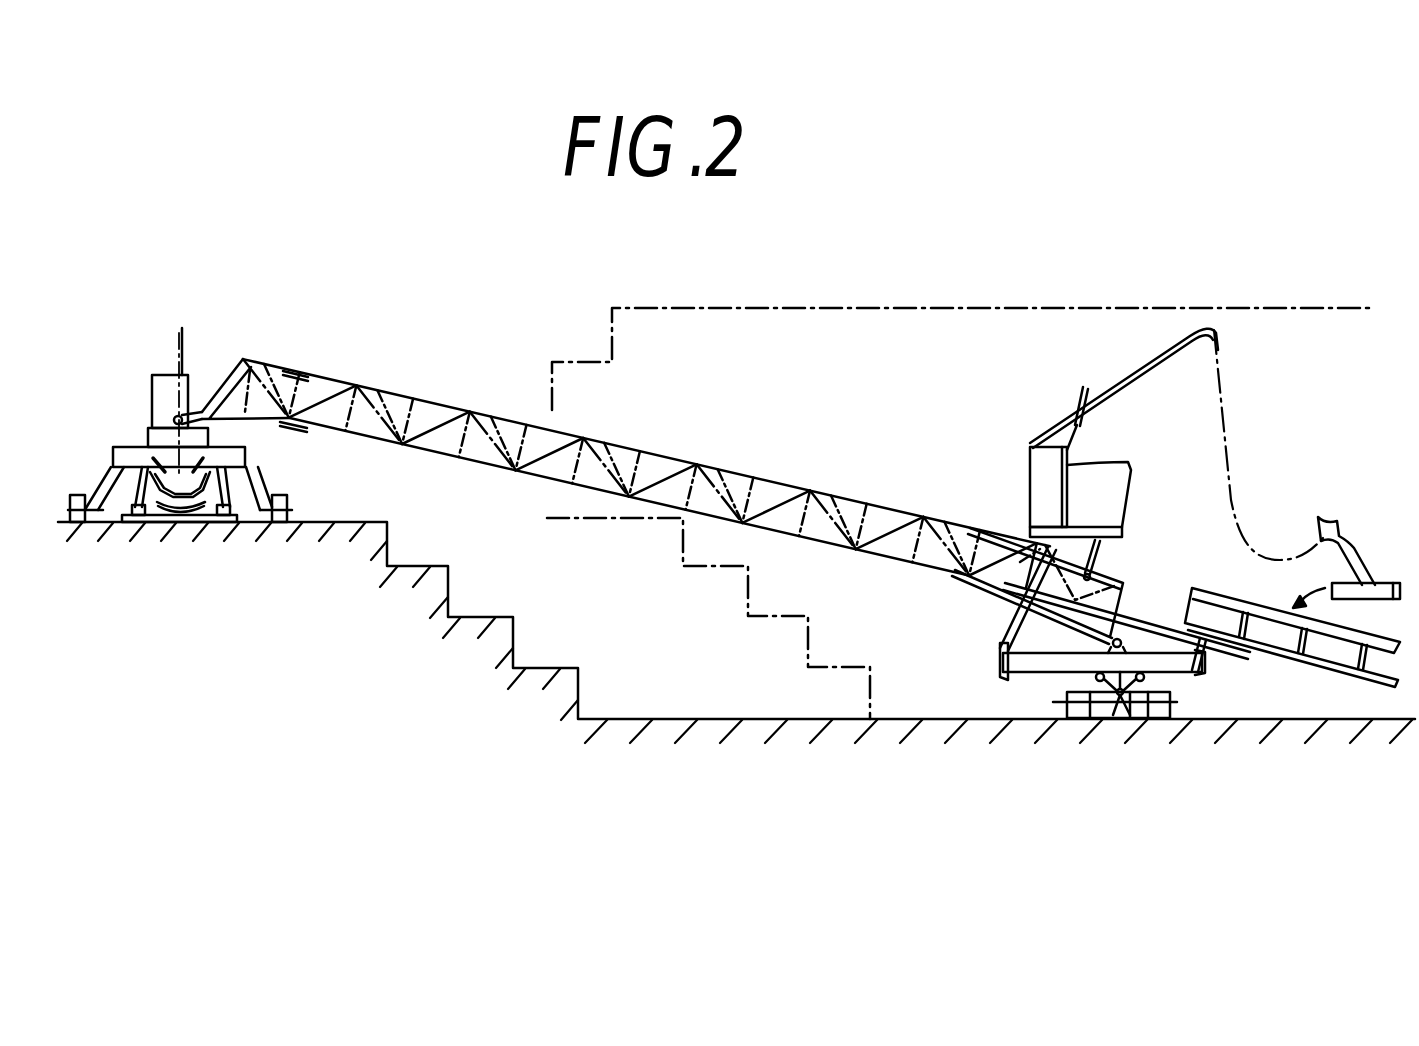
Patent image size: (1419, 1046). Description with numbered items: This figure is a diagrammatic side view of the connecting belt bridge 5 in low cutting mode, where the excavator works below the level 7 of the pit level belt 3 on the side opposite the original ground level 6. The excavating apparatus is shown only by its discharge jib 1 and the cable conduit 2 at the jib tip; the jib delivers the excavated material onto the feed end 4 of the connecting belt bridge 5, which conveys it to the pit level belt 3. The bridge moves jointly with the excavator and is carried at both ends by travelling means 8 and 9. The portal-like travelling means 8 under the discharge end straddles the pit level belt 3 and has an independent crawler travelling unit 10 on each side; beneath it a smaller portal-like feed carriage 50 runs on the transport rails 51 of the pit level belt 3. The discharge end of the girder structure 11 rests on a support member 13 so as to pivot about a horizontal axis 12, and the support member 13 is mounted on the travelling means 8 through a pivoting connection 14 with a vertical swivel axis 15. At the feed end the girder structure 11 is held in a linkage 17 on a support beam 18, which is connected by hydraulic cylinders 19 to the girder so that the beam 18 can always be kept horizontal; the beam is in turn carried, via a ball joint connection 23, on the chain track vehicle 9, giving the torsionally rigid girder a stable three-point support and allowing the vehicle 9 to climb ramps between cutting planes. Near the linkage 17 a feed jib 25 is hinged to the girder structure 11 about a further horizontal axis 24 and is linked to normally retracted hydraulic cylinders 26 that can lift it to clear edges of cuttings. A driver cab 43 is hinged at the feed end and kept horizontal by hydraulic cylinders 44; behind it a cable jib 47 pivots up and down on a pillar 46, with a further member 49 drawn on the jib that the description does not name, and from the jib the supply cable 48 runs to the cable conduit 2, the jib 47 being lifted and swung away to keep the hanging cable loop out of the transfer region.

The discharge jib 1 is at (1389, 583).
The cable conduit 2 is at (1341, 532).
The pit level belt 3 is at (133, 497).
The feed end 4 is at (1229, 587).
The connecting belt bridge 5 is at (440, 382).
The original ground level 6 is at (1040, 307).
The level of the pit level belt 7 is at (373, 516).
The travelling means 8 is at (250, 468).
The travelling means 9 is at (1058, 701).
The travelling unit 10 is at (278, 515).
The girder structure 11 is at (774, 472).
The horizontal axis 12 is at (173, 417).
The support member 13 is at (166, 383).
The pivoting connection 14 is at (152, 438).
The vertical pivoting axis 15 is at (184, 338).
The linkage 17 is at (1121, 640).
The support beam 18 is at (1003, 662).
The hydraulic cylinders 19 is at (1017, 617).
The ball joint connection 23 is at (1131, 695).
The horizontal axis 24 is at (1092, 577).
The feed jib 25 is at (1284, 657).
The hydraulic cylinders 26 is at (1207, 670).
The driver cab 43 is at (1121, 487).
The hydraulic cylinders 44 is at (1118, 558).
The pillar 46 is at (1047, 487).
The cable jib 47 is at (1131, 388).
The cable 48 is at (1227, 447).
The tie rod 49 is at (1080, 395).
The feed carriage 50 is at (223, 490).
The transport rails 51 is at (137, 515).